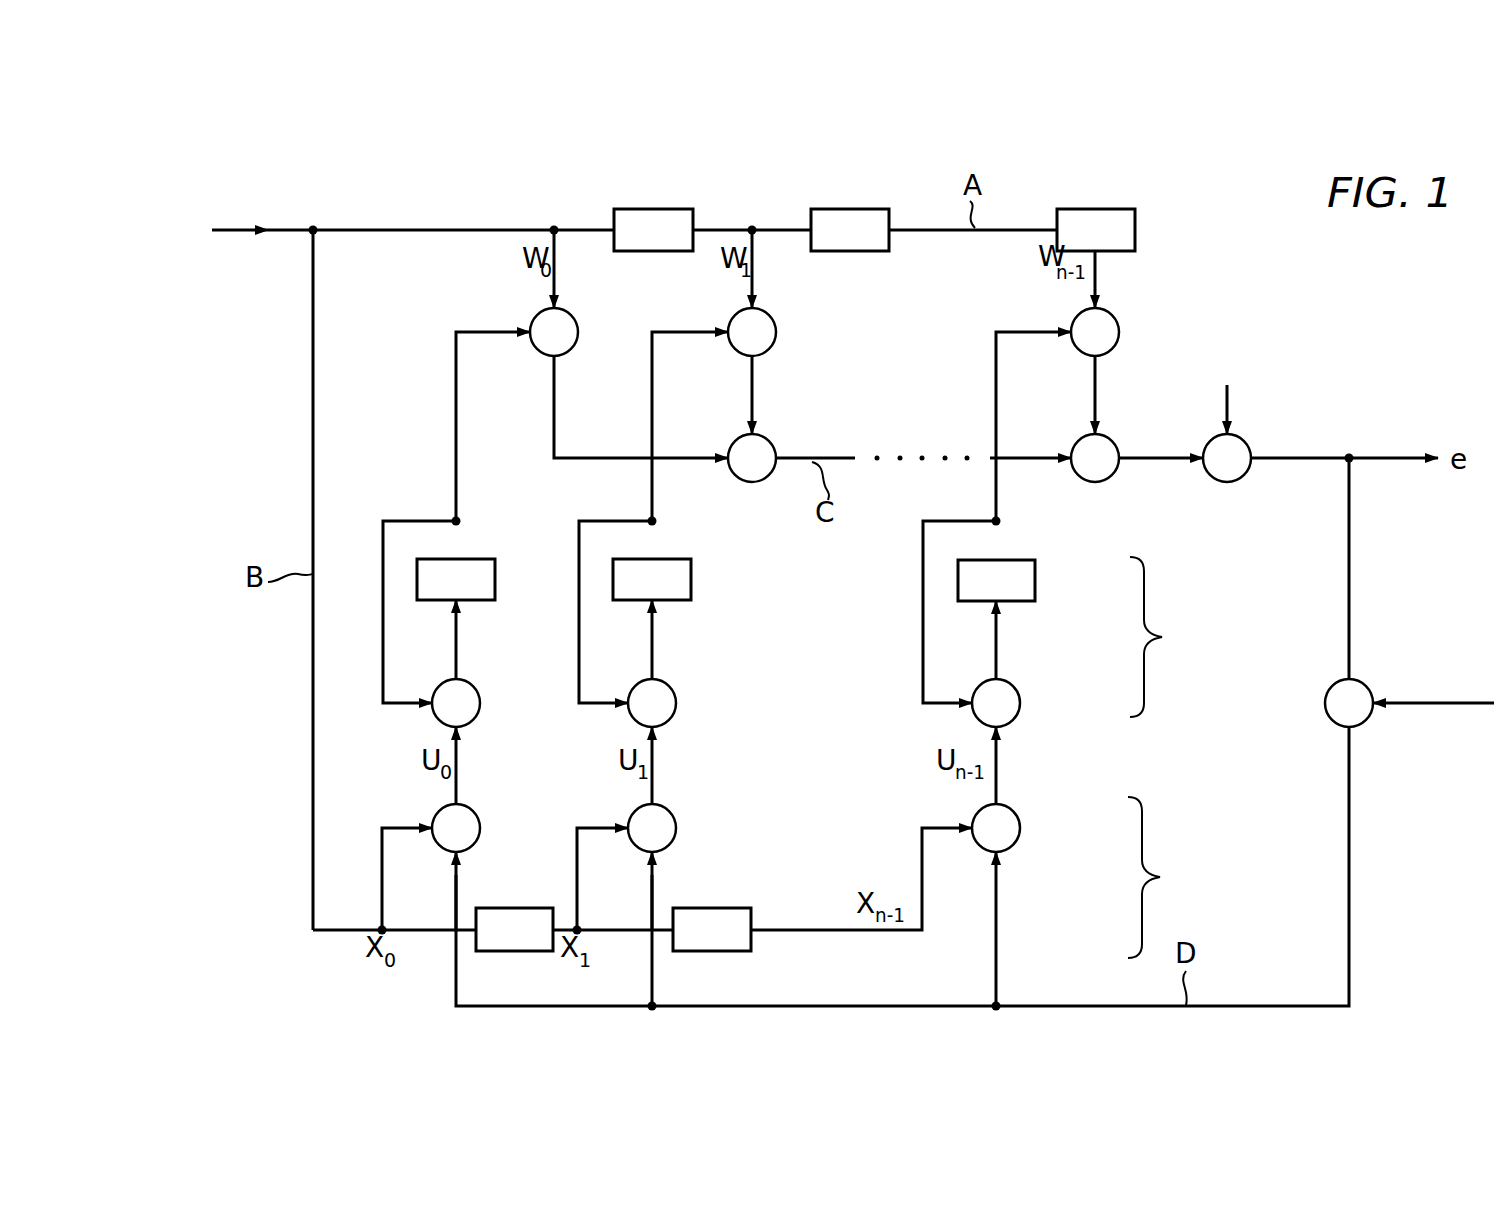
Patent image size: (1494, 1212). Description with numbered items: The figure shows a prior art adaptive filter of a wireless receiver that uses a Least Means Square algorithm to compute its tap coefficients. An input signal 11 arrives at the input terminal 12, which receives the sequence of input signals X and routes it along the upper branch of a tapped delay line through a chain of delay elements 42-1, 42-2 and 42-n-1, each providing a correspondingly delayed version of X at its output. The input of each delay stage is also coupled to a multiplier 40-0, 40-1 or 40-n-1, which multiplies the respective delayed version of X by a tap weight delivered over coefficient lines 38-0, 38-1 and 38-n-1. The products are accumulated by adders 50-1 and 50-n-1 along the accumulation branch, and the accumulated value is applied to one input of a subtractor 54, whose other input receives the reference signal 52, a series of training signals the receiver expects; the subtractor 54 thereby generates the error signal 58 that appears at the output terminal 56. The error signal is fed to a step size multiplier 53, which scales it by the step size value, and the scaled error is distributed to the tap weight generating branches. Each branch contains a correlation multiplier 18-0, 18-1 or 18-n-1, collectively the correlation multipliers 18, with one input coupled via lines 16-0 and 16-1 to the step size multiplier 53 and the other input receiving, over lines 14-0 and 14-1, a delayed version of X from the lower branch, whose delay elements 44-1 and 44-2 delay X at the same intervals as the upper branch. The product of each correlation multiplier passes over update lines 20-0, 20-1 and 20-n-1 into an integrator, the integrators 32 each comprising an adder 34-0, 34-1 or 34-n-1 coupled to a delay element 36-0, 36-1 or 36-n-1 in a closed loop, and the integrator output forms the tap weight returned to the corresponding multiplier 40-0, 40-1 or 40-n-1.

The input signal 11 is at (230, 230).
The input terminal 12 is at (415, 210).
The delay element 42-1 is at (658, 209).
The delay element 42-2 is at (855, 209).
The delay element 42-n-1 is at (1100, 209).
The multiplier 40-0 is at (535, 312).
The multiplier 40-1 is at (733, 312).
The multiplier 40-n-1 is at (1116, 313).
The coefficient line 38-0 is at (456, 419).
The coefficient line 38-1 is at (652, 488).
The coefficient line 38-n-1 is at (1000, 515).
The adder 50-1 is at (735, 440).
The adder 50-n-1 is at (1080, 440).
The reference signal 52 is at (1228, 362).
The subtractor 54 is at (1246, 440).
The error signal 58 is at (1344, 409).
The output terminal 56 is at (1378, 461).
The delay element 36-0 is at (478, 559).
The delay element 36-1 is at (677, 560).
The delay element 36-n-1 is at (1036, 582).
The adder 34-0 is at (473, 684).
The adder 34-1 is at (669, 684).
The adder 34-n-1 is at (1021, 704).
The integrator 32 is at (1211, 637).
The update signal line 20-0 is at (460, 760).
The update signal line 20-1 is at (656, 760).
The update signal line 20-n-1 is at (1000, 768).
The multiplier 18-0 is at (474, 811).
The multiplier 18-1 is at (670, 811).
The multiplier 18-n-1 is at (1021, 829).
The multiplier 18 is at (1205, 877).
The delayed input line 14-0 is at (382, 845).
The delayed input line 14-1 is at (577, 858).
The error input line 16-0 is at (452, 873).
The error input line 16-1 is at (649, 873).
The delay element 44-1 is at (513, 951).
The delay element 44-2 is at (710, 951).
The step size multiplier 53 is at (1368, 684).